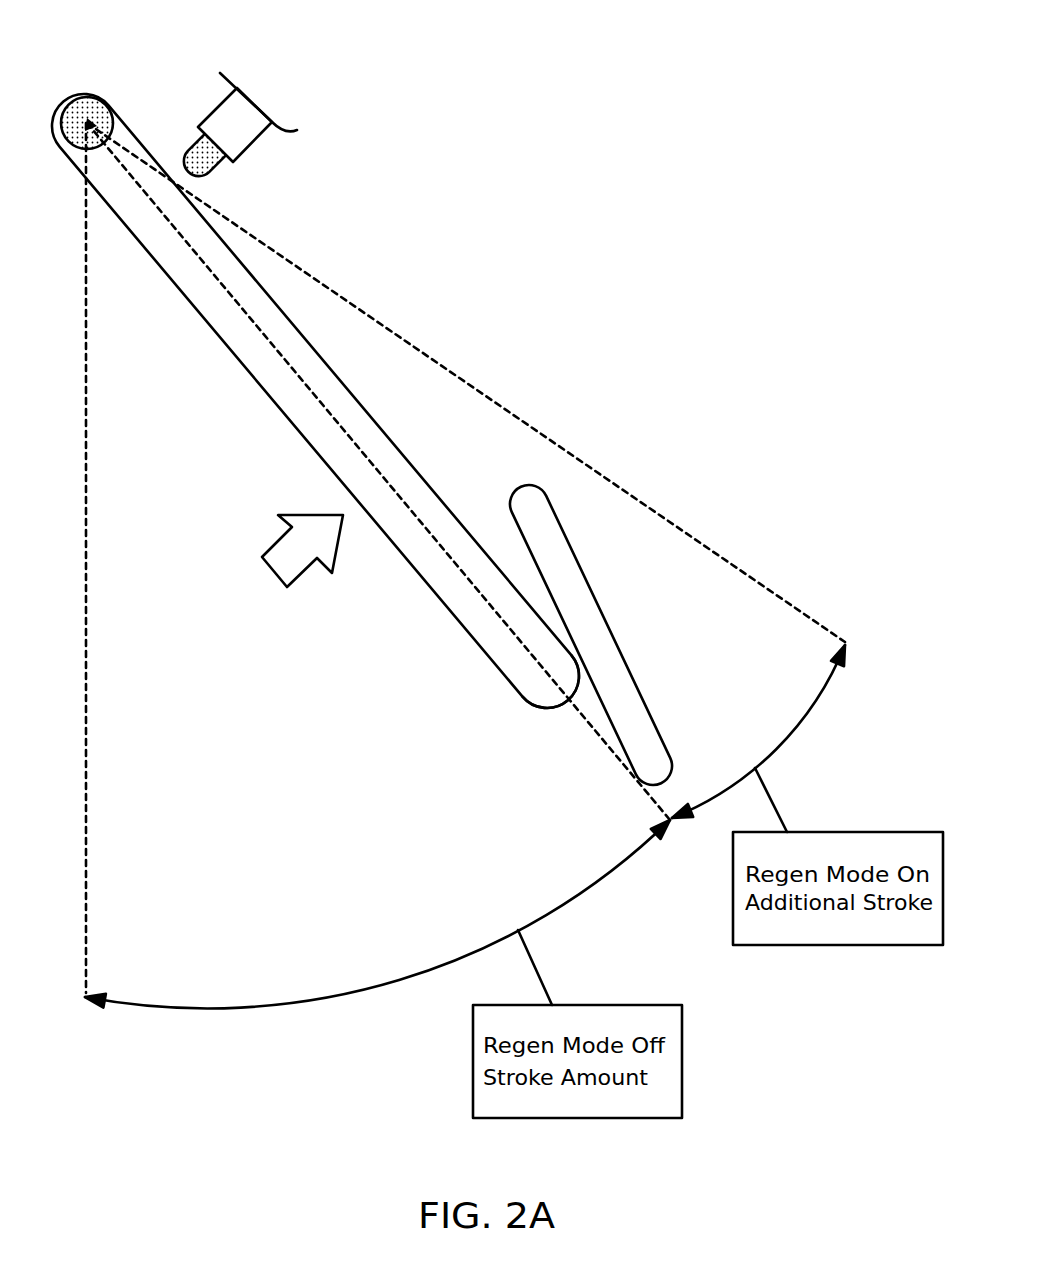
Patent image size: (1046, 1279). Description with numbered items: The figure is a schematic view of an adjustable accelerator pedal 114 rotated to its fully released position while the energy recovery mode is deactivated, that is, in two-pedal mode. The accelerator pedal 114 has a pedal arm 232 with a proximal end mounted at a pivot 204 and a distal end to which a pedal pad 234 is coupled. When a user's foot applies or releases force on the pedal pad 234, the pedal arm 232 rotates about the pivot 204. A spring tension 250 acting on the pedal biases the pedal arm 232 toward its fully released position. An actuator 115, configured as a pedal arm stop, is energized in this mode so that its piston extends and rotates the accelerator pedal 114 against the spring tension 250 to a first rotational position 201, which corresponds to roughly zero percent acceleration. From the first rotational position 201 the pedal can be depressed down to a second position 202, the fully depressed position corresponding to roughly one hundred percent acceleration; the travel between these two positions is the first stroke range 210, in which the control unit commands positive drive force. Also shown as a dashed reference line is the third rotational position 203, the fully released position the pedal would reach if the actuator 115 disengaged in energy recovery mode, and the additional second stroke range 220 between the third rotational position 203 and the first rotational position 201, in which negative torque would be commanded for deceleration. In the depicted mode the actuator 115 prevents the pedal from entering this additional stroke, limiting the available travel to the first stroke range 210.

The pivot 204 is at (88, 96).
The actuator 115 is at (214, 104).
The pedal arm 232 is at (275, 403).
The third rotational position 203 is at (655, 510).
The spring tension 250 is at (295, 590).
The first rotational position 201 is at (510, 628).
The pedal pad 234 is at (647, 708).
The accelerator pedal 114 is at (548, 710).
The second stroke range 220 is at (790, 735).
The second position 202 is at (88, 822).
The first stroke range 210 is at (384, 985).